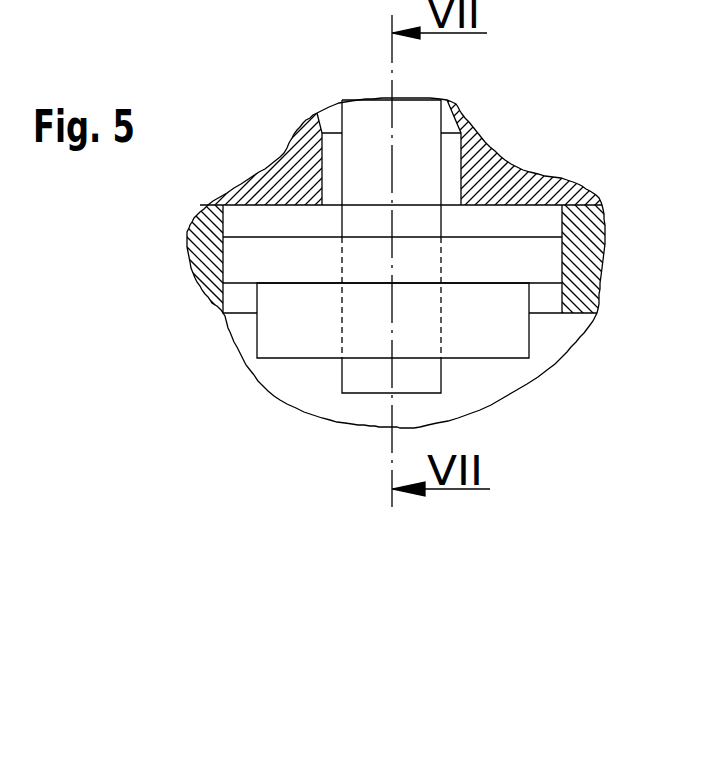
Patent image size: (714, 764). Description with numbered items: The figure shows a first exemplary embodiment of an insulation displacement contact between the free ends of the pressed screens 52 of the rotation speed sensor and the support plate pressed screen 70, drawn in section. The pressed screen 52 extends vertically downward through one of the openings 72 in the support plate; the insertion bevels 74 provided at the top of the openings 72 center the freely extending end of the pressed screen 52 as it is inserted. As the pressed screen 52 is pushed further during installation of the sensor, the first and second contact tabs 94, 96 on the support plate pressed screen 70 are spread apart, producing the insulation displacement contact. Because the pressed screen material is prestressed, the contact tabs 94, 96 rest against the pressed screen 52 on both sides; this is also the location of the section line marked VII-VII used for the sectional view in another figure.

The pressed screens 52 is at (368, 170).
The support plate pressed screen 70 is at (207, 247).
The openings 72 is at (450, 158).
The insertion bevels 74 is at (462, 124).
The first contact tab 94 is at (323, 329).
The second contact tab 96 is at (465, 330).